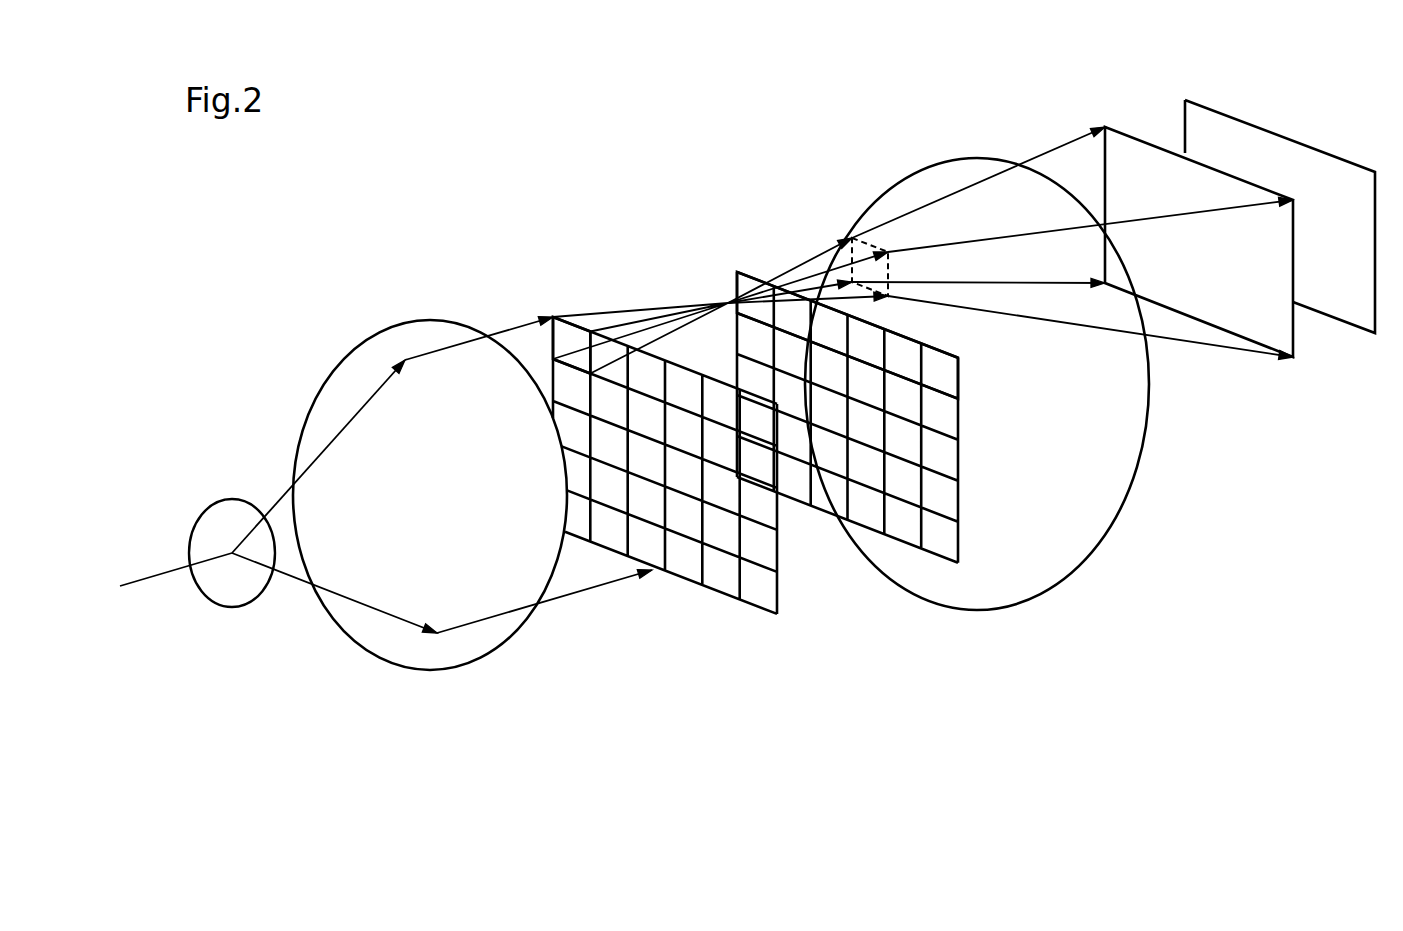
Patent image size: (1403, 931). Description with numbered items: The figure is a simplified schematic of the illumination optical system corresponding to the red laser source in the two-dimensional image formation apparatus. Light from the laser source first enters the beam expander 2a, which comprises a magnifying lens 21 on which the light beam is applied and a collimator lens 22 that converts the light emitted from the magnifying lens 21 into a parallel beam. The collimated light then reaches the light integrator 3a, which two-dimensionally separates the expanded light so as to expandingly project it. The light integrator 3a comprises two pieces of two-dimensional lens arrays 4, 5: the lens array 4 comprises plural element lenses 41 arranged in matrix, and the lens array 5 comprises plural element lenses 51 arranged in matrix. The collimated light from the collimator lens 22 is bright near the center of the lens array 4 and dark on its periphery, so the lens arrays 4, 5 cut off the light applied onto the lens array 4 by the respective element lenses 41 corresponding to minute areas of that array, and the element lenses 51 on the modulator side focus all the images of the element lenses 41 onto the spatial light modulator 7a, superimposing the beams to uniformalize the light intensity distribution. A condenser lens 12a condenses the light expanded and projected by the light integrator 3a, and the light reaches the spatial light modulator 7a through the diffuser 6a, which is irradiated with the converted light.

The beam expander 2a is at (468, 288).
The magnifying lens 21 is at (232, 608).
The collimator lens 22 is at (430, 670).
The light integrator 3a is at (738, 223).
The lens array 4 is at (777, 614).
The element lens 41 is at (565, 343).
The lens array 5 is at (957, 565).
The element lens 51 is at (745, 282).
The condenser lens 12a is at (1055, 570).
The diffuser 6a is at (1127, 153).
The spatial light modulator 7a is at (1213, 125).